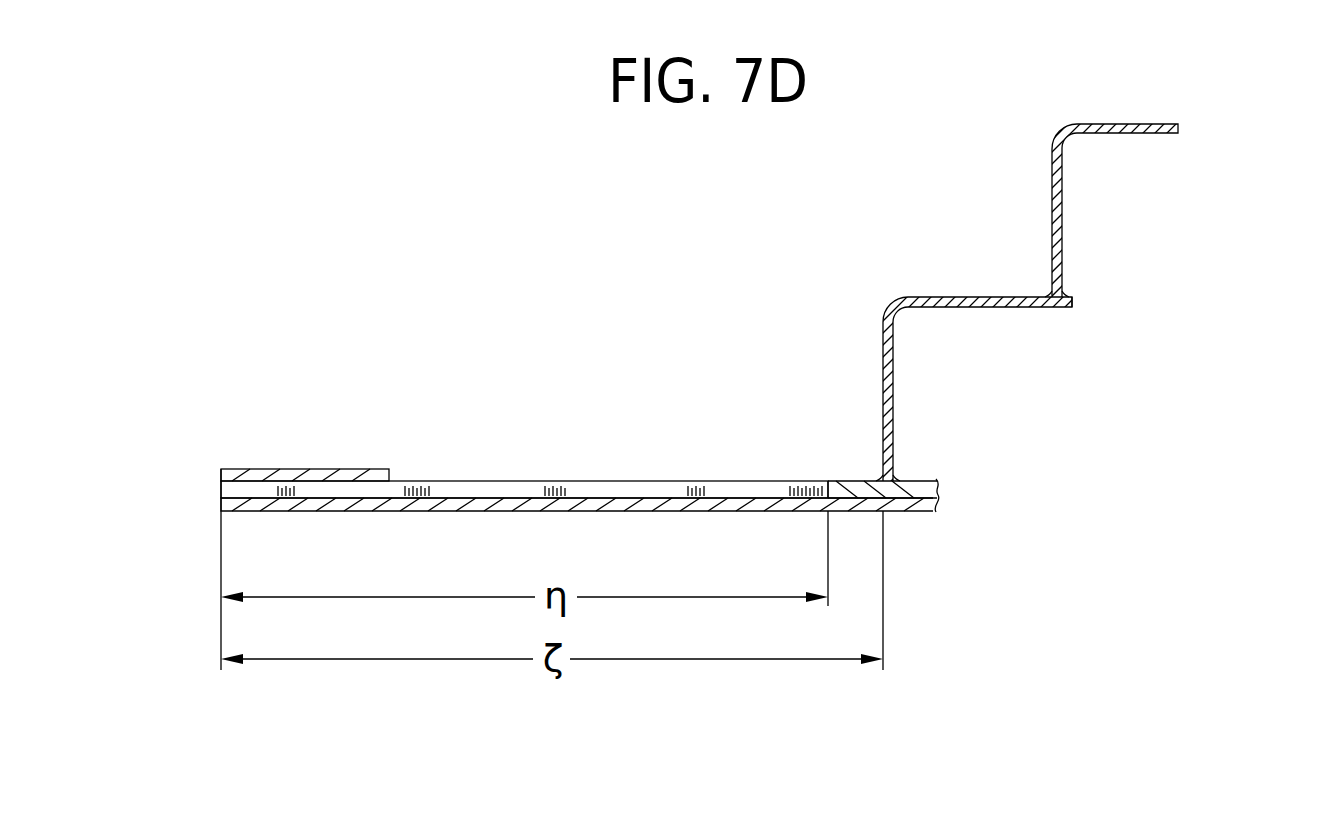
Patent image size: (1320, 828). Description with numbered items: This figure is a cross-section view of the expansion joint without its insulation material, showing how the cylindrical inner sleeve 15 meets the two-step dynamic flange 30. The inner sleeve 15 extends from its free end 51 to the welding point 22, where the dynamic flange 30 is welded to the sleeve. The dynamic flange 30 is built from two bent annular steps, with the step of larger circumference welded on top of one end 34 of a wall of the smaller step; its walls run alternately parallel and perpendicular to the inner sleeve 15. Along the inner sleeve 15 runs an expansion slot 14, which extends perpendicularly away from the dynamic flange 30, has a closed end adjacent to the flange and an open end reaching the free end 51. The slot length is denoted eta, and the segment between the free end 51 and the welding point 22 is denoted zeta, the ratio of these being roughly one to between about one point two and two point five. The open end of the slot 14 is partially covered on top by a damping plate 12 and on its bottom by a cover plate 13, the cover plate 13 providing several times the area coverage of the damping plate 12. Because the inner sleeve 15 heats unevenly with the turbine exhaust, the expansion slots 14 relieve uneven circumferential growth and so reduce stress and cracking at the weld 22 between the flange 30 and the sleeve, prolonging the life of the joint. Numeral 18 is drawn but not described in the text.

The damping plate 12 is at (315, 469).
The cover plate 13 is at (313, 512).
The expansion slot 14 is at (606, 488).
The inner sleeve 15 is at (847, 512).
The connection portion 18 is at (845, 481).
The welding point 22 is at (883, 481).
The dynamic flange 30 is at (1183, 124).
The end of wall 34 is at (1072, 324).
The free end 51 is at (221, 502).